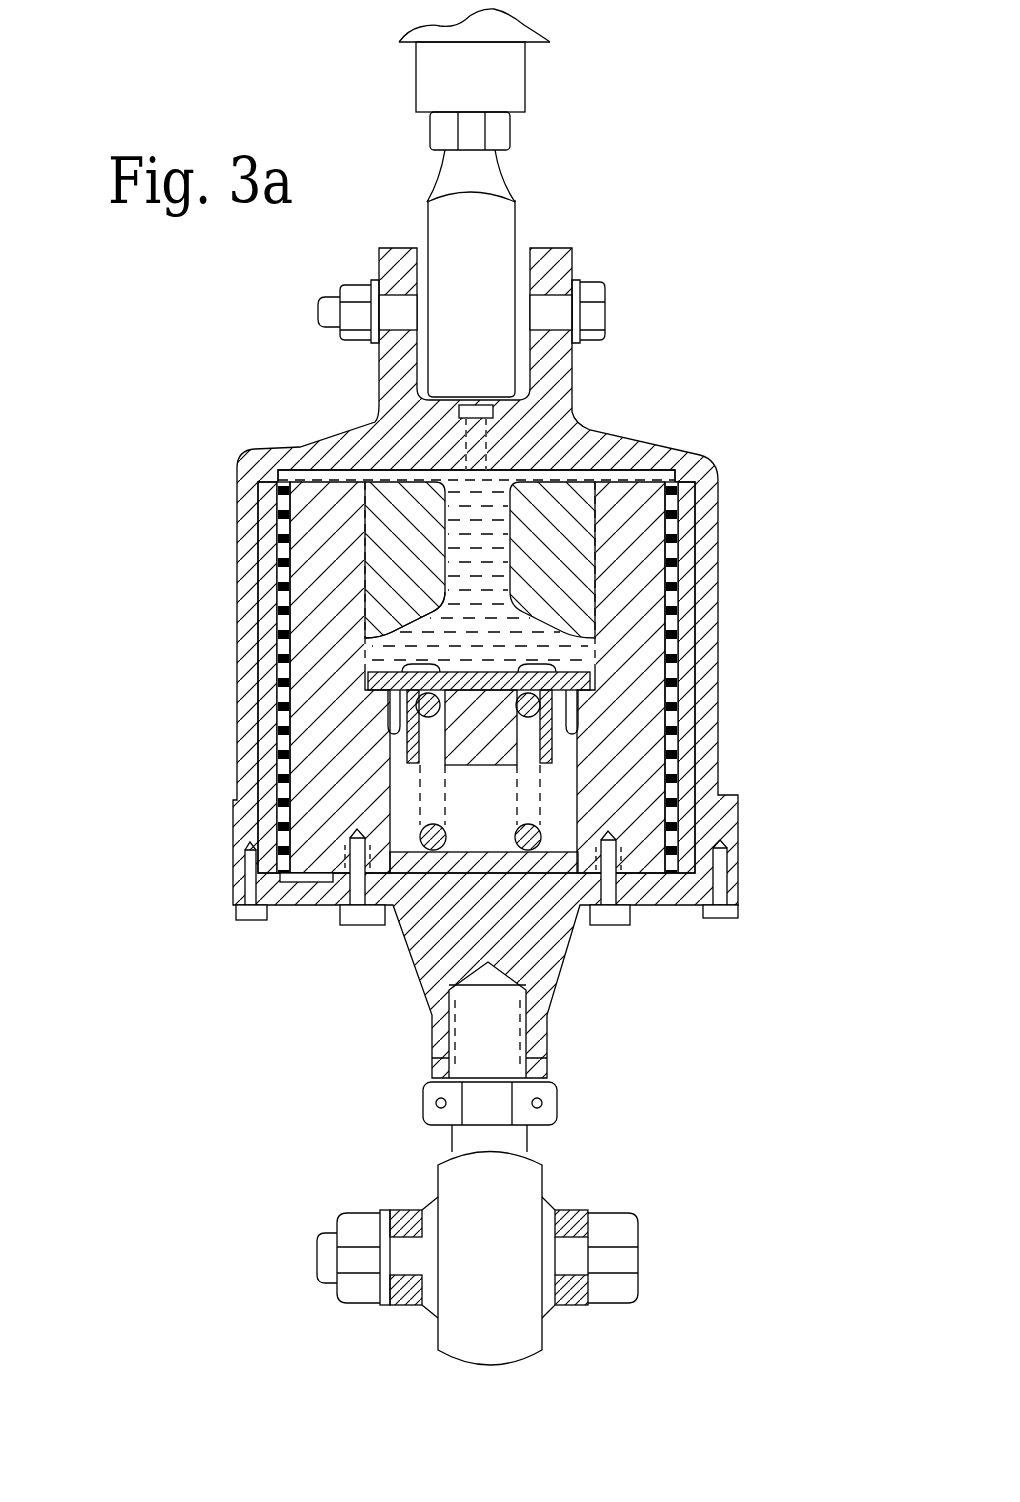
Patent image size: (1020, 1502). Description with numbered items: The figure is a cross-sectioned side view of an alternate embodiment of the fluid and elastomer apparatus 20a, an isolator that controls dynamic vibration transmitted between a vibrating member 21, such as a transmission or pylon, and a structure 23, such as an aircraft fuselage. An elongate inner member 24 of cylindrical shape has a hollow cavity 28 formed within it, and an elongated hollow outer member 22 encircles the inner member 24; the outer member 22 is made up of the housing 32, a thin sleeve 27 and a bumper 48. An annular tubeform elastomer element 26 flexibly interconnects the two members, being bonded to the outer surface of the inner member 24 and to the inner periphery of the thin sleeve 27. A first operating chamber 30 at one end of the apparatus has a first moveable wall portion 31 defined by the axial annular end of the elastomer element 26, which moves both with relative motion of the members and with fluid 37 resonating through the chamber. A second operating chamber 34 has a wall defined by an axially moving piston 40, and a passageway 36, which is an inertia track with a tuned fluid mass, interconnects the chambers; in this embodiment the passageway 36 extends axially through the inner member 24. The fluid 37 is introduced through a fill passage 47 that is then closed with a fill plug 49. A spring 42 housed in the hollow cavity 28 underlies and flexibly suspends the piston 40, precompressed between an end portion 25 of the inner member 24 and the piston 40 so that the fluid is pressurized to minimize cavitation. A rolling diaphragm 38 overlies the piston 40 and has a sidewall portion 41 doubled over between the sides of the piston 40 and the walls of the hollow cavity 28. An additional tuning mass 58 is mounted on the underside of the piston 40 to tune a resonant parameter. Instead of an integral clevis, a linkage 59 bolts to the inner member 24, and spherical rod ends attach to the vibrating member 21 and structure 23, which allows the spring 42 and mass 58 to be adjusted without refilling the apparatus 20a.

The fluid and elastomer apparatus 20a is at (733, 372).
The vibrating member 21 is at (505, 85).
The outer member 22 is at (725, 511).
The structure 23 is at (567, 1210).
The inner member 24 is at (648, 778).
The end portion 25 is at (668, 895).
The tubeform elastomer element 26 is at (680, 598).
The thin sleeve 27 is at (265, 520).
The hollow cavity 28 is at (562, 840).
The first operating chamber 30 is at (597, 470).
The first moveable wall portion 31 is at (676, 470).
The housing 32 is at (246, 808).
The second operating chamber 34 is at (425, 639).
The passageway 36 is at (490, 545).
The fluid 37 is at (385, 626).
The rolling diaphragm 38 is at (555, 700).
The piston 40 is at (402, 670).
The sidewall portion 41 is at (405, 697).
The spring 42 is at (360, 917).
The fill passage 47 is at (478, 450).
The bumper 48 is at (290, 895).
The fill plug 49 is at (473, 407).
The additional tuning mass 58 is at (482, 775).
The linkage 59 is at (540, 1037).